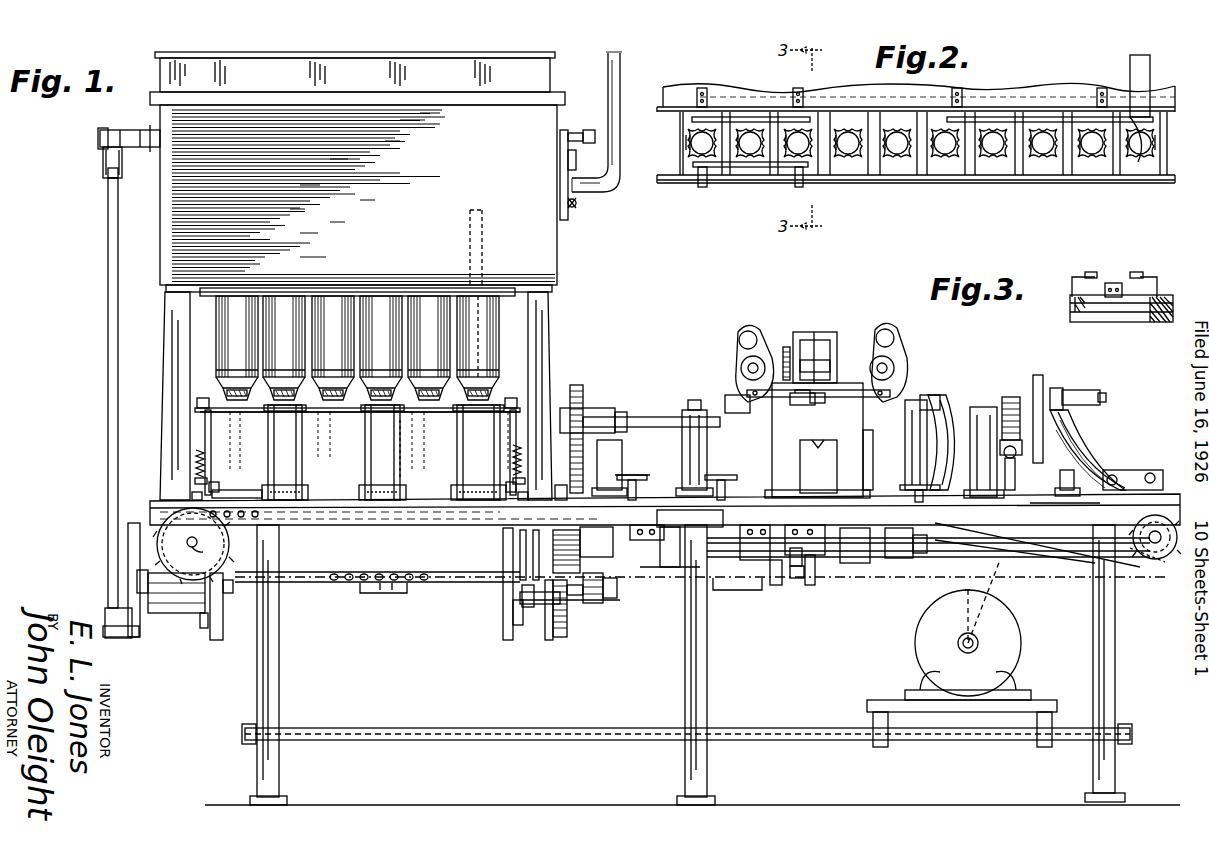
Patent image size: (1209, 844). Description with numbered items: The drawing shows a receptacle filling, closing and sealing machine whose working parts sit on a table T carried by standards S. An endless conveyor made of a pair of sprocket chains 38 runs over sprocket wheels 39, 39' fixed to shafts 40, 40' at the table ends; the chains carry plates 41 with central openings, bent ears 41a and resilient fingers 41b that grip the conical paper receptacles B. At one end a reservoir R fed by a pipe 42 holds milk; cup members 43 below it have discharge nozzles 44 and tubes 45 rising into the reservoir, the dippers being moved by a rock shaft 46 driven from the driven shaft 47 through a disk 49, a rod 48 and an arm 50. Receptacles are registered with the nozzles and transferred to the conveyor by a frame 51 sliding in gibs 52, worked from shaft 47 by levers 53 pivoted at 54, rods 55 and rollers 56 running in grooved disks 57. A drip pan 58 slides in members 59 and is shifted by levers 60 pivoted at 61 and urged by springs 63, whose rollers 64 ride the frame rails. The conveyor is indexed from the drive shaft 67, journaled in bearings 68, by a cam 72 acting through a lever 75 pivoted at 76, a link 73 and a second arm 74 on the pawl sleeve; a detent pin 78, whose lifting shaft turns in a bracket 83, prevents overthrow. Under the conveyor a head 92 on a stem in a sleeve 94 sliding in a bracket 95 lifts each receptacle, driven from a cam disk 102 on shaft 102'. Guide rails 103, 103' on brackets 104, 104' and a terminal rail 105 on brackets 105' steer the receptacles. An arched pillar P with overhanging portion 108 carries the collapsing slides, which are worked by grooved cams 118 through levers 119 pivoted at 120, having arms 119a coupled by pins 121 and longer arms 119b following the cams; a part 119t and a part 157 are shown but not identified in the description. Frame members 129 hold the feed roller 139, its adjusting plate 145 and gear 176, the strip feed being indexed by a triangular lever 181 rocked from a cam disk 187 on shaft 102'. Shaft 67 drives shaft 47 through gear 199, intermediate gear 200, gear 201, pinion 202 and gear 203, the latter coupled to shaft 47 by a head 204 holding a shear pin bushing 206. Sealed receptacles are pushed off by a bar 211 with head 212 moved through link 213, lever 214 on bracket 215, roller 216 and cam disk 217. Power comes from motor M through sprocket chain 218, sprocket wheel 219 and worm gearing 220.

In FIG. 1, the reservoir R is at (357, 172).
In FIG. 1, the pipe 42 is at (620, 160).
In FIG. 1, the cup members 43 is at (495, 332).
In FIG. 1, the discharge nozzles 44 is at (375, 403).
In FIG. 1, the tubes 45 is at (483, 232).
In FIG. 1, the rock shaft 46 is at (100, 138).
In FIG. 1, the driven shaft 47 is at (326, 584).
In FIG. 1, the rod 48 is at (108, 490).
In FIG. 1, the disk 49 is at (138, 630).
In FIG. 1, the arm 50 is at (105, 160).
In FIG. 1, the frame 51 is at (336, 495).
In FIG. 1, the gibs 52 is at (228, 496).
In FIG. 1, the levers 53 is at (205, 625).
In FIG. 1, the lever pivot 54 is at (208, 630).
In FIG. 1, the rods 55 is at (195, 493).
In FIG. 1, the cam rollers 56 is at (553, 545).
In FIG. 1, the cam disks 57 is at (222, 636).
In FIG. 1, the pan 58 is at (242, 413).
In FIG. 1, the pan supporting members 59 is at (205, 400).
In FIG. 1, the levers 60 is at (208, 425).
In FIG. 1, the lever pivot 61 is at (200, 478).
In FIG. 1, the springs 63 is at (196, 462).
In FIG. 1, the rollers 64 is at (213, 483).
In FIG. 1, the drive shaft 67 is at (626, 418).
In FIG. 1, the bearing members 68 is at (685, 447).
In FIG. 1, the cam 72 is at (948, 395).
In FIG. 1, the link 73 is at (1076, 572).
In FIG. 1, the second arm 74 is at (1150, 575).
In FIG. 1, the lever 75 is at (930, 563).
In FIG. 1, the bracket pivot 76 is at (940, 468).
In FIG. 1, the detent pin 78 is at (1142, 472).
In FIG. 1, the bracket 83 is at (1070, 503).
In FIG. 1, the head 92 is at (802, 490).
In FIG. 1, the sleeve 94 is at (832, 516).
In FIG. 1, the bracket 95 is at (811, 585).
In FIG. 1, the cam disk 102 is at (863, 572).
In FIG. 1, the shaft 102' is at (670, 587).
In FIG. 2, the guide rail 103 is at (751, 91).
In FIG. 3, the guide rail 103 is at (1147, 256).
In FIG. 1, the guide rail 103' is at (649, 465).
In FIG. 2, the guide rail 103' is at (750, 188).
In FIG. 3, the guide rail 103' is at (1103, 257).
In FIG. 2, the angle brackets 104 is at (767, 80).
In FIG. 3, the angle brackets 104 is at (1159, 276).
In FIG. 1, the brackets 104' is at (648, 507).
In FIG. 2, the brackets 104' is at (757, 191).
In FIG. 3, the brackets 104' is at (1062, 274).
In FIG. 1, the guide rail 105 is at (918, 491).
In FIG. 2, the guide rail 105 is at (1050, 87).
In FIG. 2, the brackets 105' is at (1041, 66).
In FIG. 1, the overhanging portion 108 is at (852, 397).
In FIG. 1, the cams 118 is at (730, 398).
In FIG. 1, the levers 119 is at (749, 352).
In FIG. 1, the lever arms 119a is at (740, 345).
In FIG. 1, the lever arms 119b is at (905, 376).
In FIG. 1, the pin 119t is at (736, 372).
In FIG. 1, the lever pivot 120 is at (742, 368).
In FIG. 1, the pin 121 is at (748, 392).
In FIG. 1, the frame members 129 is at (832, 340).
In FIG. 1, the feed roller 139 is at (816, 335).
In FIG. 1, the plate 145 is at (808, 332).
In FIG. 1, the lug 157 is at (817, 403).
In FIG. 1, the gear 176 is at (785, 348).
In FIG. 1, the lever 181 is at (772, 585).
In FIG. 1, the cam disk 187 is at (796, 580).
In FIG. 1, the gear 199 is at (580, 385).
In FIG. 1, the intermediate gear 200 is at (600, 453).
In FIG. 1, the gear 201 is at (568, 620).
In FIG. 1, the pinion 202 is at (553, 548).
In FIG. 1, the gear 203 is at (560, 640).
In FIG. 1, the head 204 is at (605, 601).
In FIG. 1, the bushing 206 is at (582, 606).
In FIG. 2, the pusher bar 211 is at (1143, 60).
In FIG. 2, the head 212 is at (1137, 160).
In FIG. 1, the link 213 is at (1068, 478).
In FIG. 1, the lever 214 is at (1075, 445).
In FIG. 1, the bracket 215 is at (1080, 424).
In FIG. 1, the roller stud 216 is at (1063, 392).
In FIG. 1, the cam disk 217 is at (1056, 388).
In FIG. 1, the sprocket chain 218 is at (1000, 572).
In FIG. 1, the sprocket wheel 219 is at (1036, 376).
In FIG. 1, the worm gearing 220 is at (1008, 397).
In FIG. 1, the sprocket chains 38 is at (420, 583).
In FIG. 1, the sprocket wheel 39 is at (1155, 534).
In FIG. 1, the sprocket wheel 39' is at (193, 546).
In FIG. 1, the shaft 40 is at (1162, 569).
In FIG. 1, the shaft 40' is at (204, 552).
In FIG. 1, the plates 41 is at (378, 592).
In FIG. 2, the plates 41 is at (856, 170).
In FIG. 3, the plates 41 is at (1093, 322).
In FIG. 1, the ears 41a is at (405, 592).
In FIG. 2, the ears 41a is at (976, 165).
In FIG. 3, the ears 41a is at (1152, 322).
In FIG. 1, the fingers 41b is at (400, 470).
In FIG. 1, the receptacles B is at (365, 453).
In FIG. 1, the standards S is at (170, 368).
In FIG. 1, the table T is at (405, 528).
In FIG. 2, the table T is at (1015, 90).
In FIG. 1, the arched pillar P is at (855, 460).
In FIG. 1, the electric motor M is at (1020, 646).